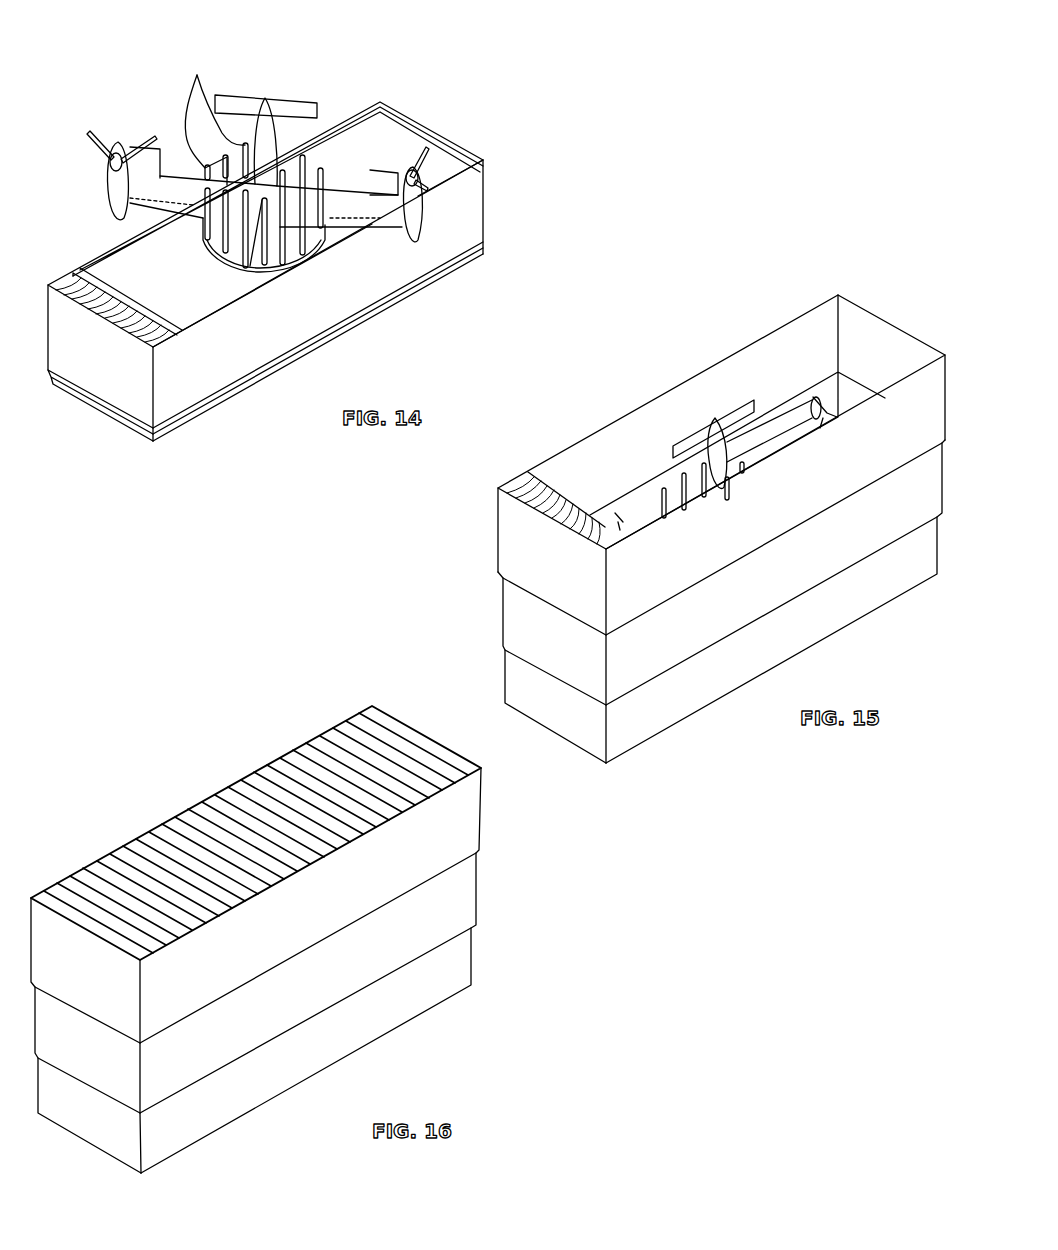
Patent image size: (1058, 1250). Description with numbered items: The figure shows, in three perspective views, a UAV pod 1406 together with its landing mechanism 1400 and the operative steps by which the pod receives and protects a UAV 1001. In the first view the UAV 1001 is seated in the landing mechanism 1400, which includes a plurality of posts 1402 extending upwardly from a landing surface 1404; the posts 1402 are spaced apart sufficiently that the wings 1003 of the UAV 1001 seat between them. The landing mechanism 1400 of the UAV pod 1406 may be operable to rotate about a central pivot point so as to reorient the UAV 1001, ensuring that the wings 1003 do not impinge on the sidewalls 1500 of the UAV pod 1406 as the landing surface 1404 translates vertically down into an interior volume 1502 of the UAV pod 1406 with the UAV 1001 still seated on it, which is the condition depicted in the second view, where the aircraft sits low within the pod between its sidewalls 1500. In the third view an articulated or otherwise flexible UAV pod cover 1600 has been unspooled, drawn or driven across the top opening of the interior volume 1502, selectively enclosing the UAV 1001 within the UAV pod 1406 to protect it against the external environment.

In FIG. 14, the UAV 1001 is at (258, 125).
In FIG. 14, the wings 1003 is at (143, 185).
In FIG. 14, the landing mechanism 1400 is at (254, 202).
In FIG. 14, the posts 1402 is at (197, 75).
In FIG. 14, the landing surface 1404 is at (312, 243).
In FIG. 14, the UAV pod 1406 is at (381, 97).
In FIG. 15, the UAV pod 1406 is at (721, 497).
In FIG. 15, the sidewalls 1500 is at (758, 354).
In FIG. 15, the interior volume 1502 is at (804, 338).
In FIG. 16, the UAV pod cover 1600 is at (317, 787).